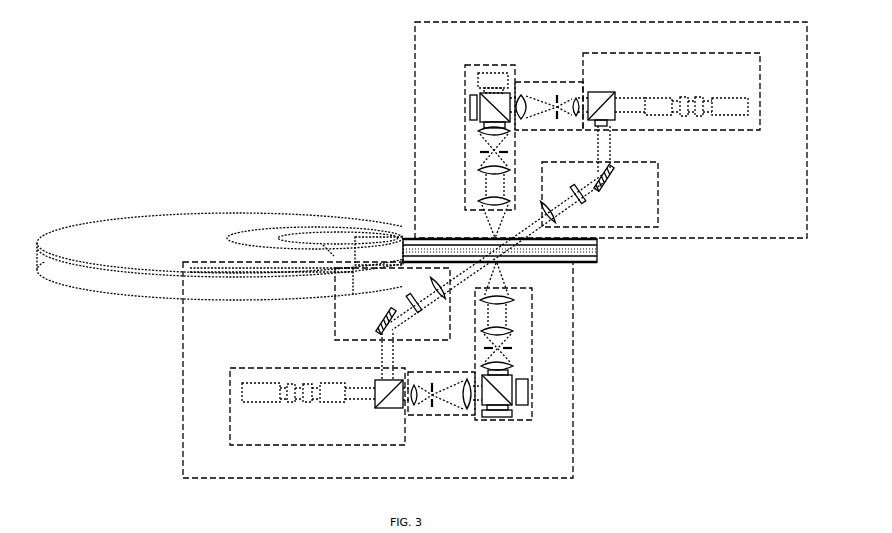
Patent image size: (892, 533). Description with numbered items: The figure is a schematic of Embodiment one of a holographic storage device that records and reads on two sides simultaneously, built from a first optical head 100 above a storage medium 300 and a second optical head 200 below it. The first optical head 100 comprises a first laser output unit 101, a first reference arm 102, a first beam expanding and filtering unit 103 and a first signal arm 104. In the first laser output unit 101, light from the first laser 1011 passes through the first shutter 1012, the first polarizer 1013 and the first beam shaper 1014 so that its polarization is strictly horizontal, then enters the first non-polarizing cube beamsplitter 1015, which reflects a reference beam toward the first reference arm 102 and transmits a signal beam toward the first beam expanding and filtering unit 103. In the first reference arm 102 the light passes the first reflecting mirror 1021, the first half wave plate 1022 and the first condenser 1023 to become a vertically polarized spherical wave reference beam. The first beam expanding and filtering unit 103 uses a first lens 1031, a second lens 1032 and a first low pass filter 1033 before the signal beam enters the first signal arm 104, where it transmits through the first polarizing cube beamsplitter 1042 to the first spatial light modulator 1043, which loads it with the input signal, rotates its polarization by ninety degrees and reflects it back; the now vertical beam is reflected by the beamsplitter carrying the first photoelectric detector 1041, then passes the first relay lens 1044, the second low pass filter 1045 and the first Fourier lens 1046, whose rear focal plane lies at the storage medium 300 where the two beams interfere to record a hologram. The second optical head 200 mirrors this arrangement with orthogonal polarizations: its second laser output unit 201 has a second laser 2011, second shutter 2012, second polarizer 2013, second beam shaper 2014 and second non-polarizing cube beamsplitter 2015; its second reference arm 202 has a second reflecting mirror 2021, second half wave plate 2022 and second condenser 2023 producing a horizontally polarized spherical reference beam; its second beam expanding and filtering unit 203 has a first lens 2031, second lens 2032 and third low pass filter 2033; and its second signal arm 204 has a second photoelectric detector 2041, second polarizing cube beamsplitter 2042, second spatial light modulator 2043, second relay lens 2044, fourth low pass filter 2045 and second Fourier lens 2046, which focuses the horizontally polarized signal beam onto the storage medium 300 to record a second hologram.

The first optical head 100 is at (416, 128).
The first laser output unit 101 is at (762, 101).
The first laser 1011 is at (738, 116).
The first shutter 1012 is at (700, 96).
The first polarizer 1013 is at (685, 117).
The first beam shaper 1014 is at (656, 97).
The first non-polarizing cube beamsplitter 1015 is at (600, 92).
The first reference arm 102 is at (660, 194).
The first reflecting mirror 1021 is at (613, 181).
The first half wave plate 1022 is at (585, 200).
The first condenser 1023 is at (556, 214).
The first beam expanding and filtering unit 103 is at (570, 132).
The first lens 1031 is at (576, 96).
The second lens 1032 is at (521, 94).
The first low pass filter 1033 is at (556, 95).
The first signal arm 104 is at (491, 64).
The first photoelectric detector 1041 is at (479, 78).
The first polarizing cube beamsplitter 1042 is at (480, 93).
The first spatial light modulator 1043 is at (471, 106).
The first relay lens 1044 is at (511, 134).
The second low pass filter 1045 is at (481, 150).
The first Fourier lens 1046 is at (481, 200).
The second optical head 200 is at (575, 345).
The second laser output unit 201 is at (230, 398).
The second laser 2011 is at (258, 383).
The second shutter 2012 is at (292, 403).
The second polarizer 2013 is at (306, 383).
The second beam shaper 2014 is at (332, 403).
The second non-polarizing cube beamsplitter 2015 is at (392, 409).
The second reference arm 202 is at (333, 308).
The second reflecting mirror 2021 is at (381, 322).
The second half wave plate 2022 is at (408, 298).
The second condenser 2023 is at (430, 285).
The second beam expanding and filtering unit 203 is at (423, 371).
The first lens 2031 is at (414, 410).
The second lens 2032 is at (468, 412).
The third low pass filter 2033 is at (434, 406).
The second signal arm 204 is at (503, 422).
The second photoelectric detector 2041 is at (523, 393).
The second polarizing cube beamsplitter 2042 is at (512, 405).
The second spatial light modulator 2043 is at (509, 414).
The second relay lens 2044 is at (483, 367).
The fourth low pass filter 2045 is at (511, 350).
The second Fourier lens 2046 is at (513, 301).
The storage medium 300 is at (307, 218).